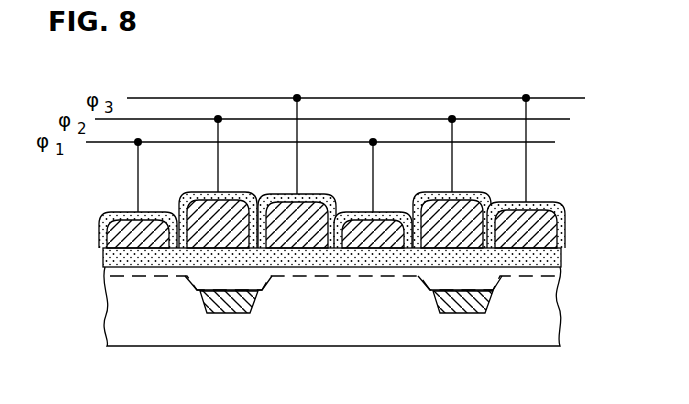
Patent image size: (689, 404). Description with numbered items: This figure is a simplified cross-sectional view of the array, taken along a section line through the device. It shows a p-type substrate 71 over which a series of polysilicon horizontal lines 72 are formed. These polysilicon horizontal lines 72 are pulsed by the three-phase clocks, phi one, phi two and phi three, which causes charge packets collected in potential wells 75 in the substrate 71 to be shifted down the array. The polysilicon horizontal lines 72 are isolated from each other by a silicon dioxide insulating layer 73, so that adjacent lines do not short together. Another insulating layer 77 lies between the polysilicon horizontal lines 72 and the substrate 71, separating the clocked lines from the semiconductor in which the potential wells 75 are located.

The substrate 71 is at (527, 330).
The polysilicon horizontal lines 72 is at (452, 202).
The silicon dioxide insulating layer 73 is at (270, 194).
The potential wells 75 is at (206, 305).
The insulating layer 77 is at (561, 251).